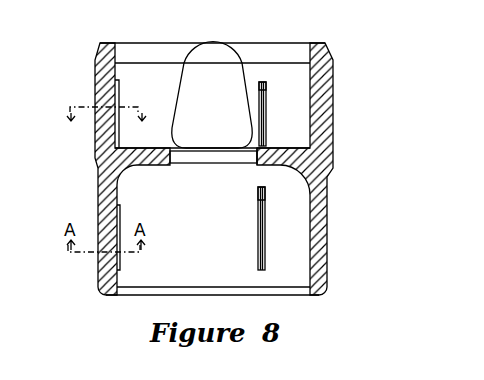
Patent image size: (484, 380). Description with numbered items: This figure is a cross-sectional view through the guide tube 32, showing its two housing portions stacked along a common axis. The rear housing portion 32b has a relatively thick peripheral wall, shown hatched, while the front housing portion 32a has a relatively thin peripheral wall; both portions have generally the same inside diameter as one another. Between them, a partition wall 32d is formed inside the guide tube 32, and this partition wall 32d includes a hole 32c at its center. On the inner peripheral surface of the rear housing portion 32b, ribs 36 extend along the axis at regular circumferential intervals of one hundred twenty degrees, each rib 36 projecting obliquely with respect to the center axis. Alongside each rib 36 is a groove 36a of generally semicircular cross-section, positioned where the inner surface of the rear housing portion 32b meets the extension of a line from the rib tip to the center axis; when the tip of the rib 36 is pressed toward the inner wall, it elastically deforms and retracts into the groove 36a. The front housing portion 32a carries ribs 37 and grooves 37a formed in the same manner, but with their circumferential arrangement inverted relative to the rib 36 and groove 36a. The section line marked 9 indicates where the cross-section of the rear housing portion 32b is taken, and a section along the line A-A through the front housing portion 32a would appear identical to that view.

The guide tube 32 is at (396, 18).
The front housing portion 32a is at (327, 222).
The rear housing portion 32b is at (333, 123).
The hole 32c is at (170, 160).
The partition wall 32d is at (259, 163).
The rib 36 is at (119, 86).
The groove 36a is at (258, 84).
The rib 37 is at (121, 206).
The groove 37a is at (266, 230).
The section line 9- 9 is at (107, 124).